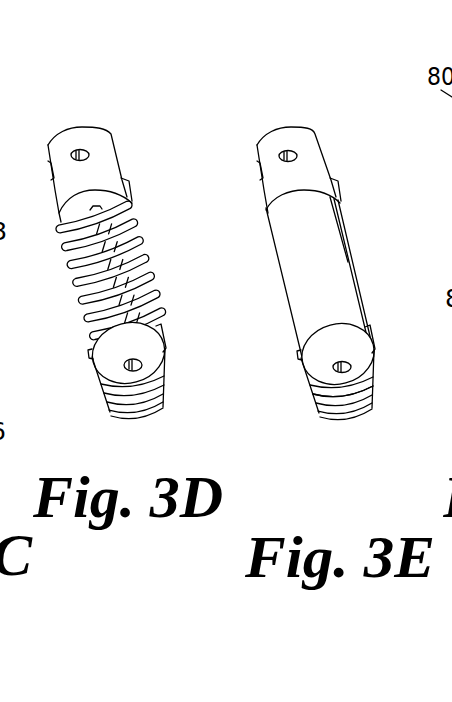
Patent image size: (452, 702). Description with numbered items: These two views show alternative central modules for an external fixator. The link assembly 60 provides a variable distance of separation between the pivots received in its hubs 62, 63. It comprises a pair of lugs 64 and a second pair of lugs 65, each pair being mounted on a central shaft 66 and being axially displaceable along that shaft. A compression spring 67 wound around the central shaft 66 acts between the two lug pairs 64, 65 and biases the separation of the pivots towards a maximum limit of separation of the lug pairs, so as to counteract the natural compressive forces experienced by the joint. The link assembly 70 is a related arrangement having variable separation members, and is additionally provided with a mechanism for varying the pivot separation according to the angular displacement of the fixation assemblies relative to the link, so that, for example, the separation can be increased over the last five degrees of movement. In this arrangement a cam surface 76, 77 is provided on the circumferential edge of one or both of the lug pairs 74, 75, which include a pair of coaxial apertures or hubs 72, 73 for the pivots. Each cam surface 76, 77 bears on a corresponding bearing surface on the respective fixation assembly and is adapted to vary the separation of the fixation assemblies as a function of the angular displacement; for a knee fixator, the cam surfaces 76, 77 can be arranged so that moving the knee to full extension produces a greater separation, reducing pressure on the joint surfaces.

In FIG. 3D, the link assembly 60 is at (57, 113).
In FIG. 3D, the hub 62 is at (81, 150).
In FIG. 3D, the pair of lugs 64 is at (69, 151).
In FIG. 3D, the central shaft 66 is at (112, 270).
In FIG. 3D, the compression spring 67 is at (77, 284).
In FIG. 3D, the hub 63 is at (140, 368).
In FIG. 3D, the pair of lugs 65 is at (130, 379).
In FIG. 3E, the link assembly 70 is at (256, 78).
In FIG. 3E, the aperture or hub 72 is at (287, 157).
In FIG. 3E, the pair of lugs 74 is at (275, 149).
In FIG. 3E, the cam surface 76 is at (282, 127).
In FIG. 3E, the aperture or hub 73 is at (353, 368).
In FIG. 3E, the pair of lugs 75 is at (346, 393).
In FIG. 3E, the cam surface 77 is at (343, 396).